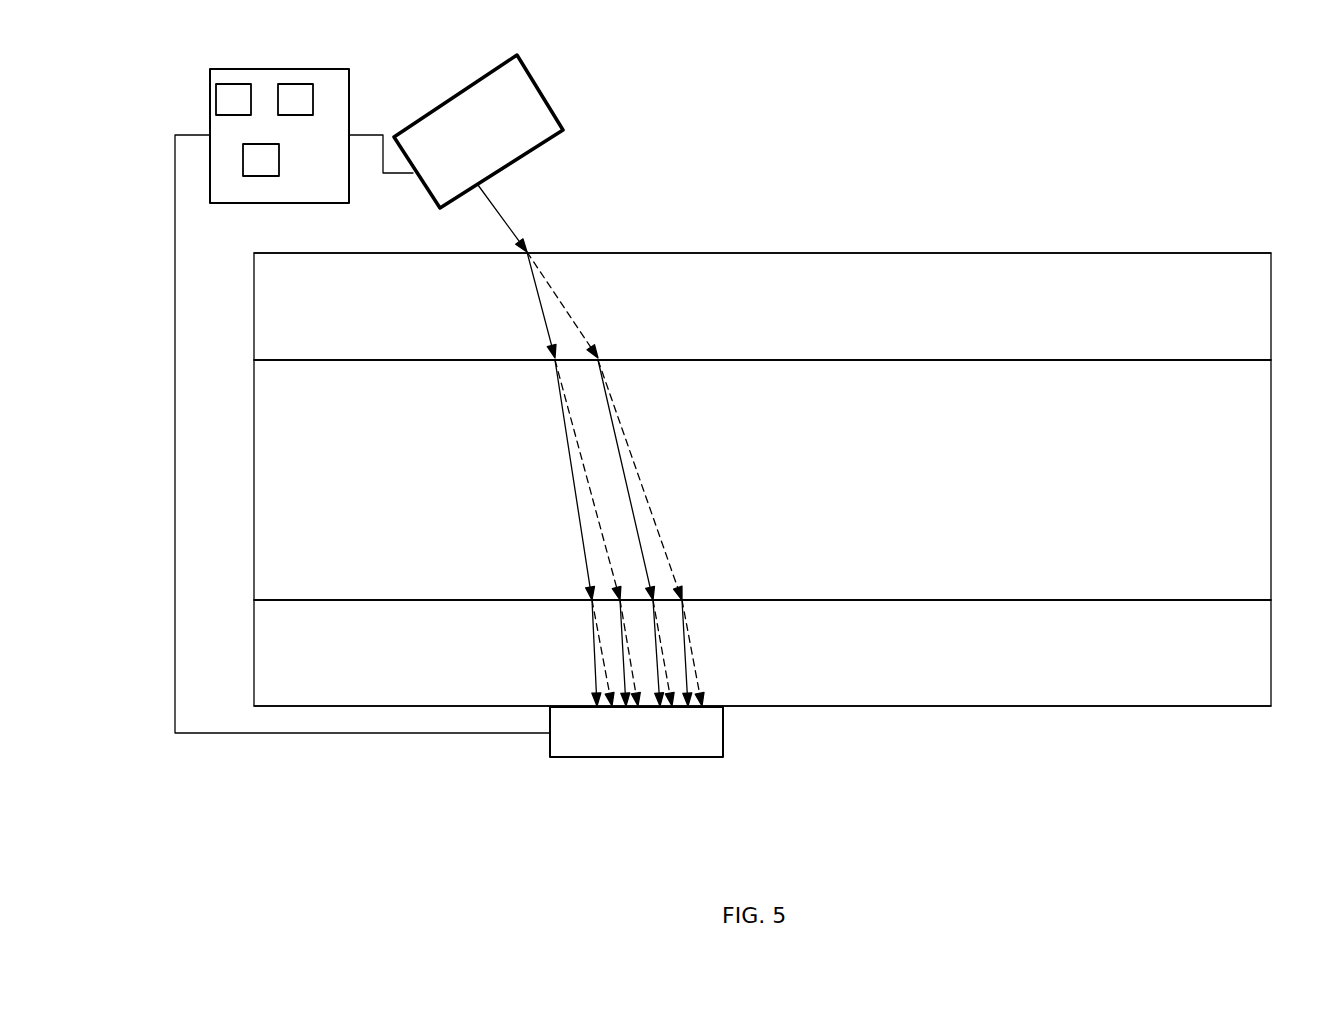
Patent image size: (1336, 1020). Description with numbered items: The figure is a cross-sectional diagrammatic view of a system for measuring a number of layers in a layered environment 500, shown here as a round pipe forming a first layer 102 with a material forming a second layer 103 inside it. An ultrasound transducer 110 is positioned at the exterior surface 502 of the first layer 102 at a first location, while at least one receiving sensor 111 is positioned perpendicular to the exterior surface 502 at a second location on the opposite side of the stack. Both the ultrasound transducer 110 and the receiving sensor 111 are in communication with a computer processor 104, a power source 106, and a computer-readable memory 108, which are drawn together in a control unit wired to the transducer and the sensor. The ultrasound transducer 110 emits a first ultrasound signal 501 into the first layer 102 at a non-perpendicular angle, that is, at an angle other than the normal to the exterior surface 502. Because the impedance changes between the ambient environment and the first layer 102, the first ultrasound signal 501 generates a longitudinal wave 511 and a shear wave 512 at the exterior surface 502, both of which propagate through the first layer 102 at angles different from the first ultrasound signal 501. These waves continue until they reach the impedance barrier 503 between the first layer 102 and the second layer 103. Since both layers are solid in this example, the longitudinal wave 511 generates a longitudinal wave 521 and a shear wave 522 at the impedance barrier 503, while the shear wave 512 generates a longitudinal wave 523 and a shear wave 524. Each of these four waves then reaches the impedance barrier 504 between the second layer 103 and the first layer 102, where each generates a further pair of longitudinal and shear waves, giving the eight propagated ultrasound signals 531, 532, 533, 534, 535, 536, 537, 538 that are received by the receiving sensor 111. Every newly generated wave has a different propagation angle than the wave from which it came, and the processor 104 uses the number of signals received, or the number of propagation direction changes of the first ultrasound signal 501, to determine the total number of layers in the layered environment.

The system for measuring a number of layers in a layered environment 500 is at (1120, 145).
The first layer 102 is at (1133, 327).
The second layer 103 is at (1133, 493).
The computer processor 104 is at (235, 88).
The power source 106 is at (300, 97).
The computer-readable memory 108 is at (247, 150).
The ultrasound transducer 110 is at (540, 110).
The receiving sensor 111 is at (558, 743).
The first ultrasound signal 501 is at (487, 202).
The exterior surface 502 is at (911, 249).
The impedance barrier 503 is at (932, 357).
The impedance barrier 504 is at (957, 597).
The longitudinal wave 511 is at (540, 300).
The shear wave 512 is at (583, 333).
The longitudinal wave 521 is at (563, 403).
The shear wave 522 is at (588, 477).
The longitudinal wave 523 is at (613, 413).
The shear wave 524 is at (630, 455).
The propagated ultrasound signal 531 is at (596, 622).
The propagated ultrasound signal 532 is at (600, 645).
The propagated ultrasound signal 533 is at (622, 663).
The propagated ultrasound signal 534 is at (633, 685).
The propagated ultrasound signal 535 is at (656, 630).
The propagated ultrasound signal 536 is at (663, 650).
The propagated ultrasound signal 537 is at (687, 673).
The propagated ultrasound signal 538 is at (699, 693).